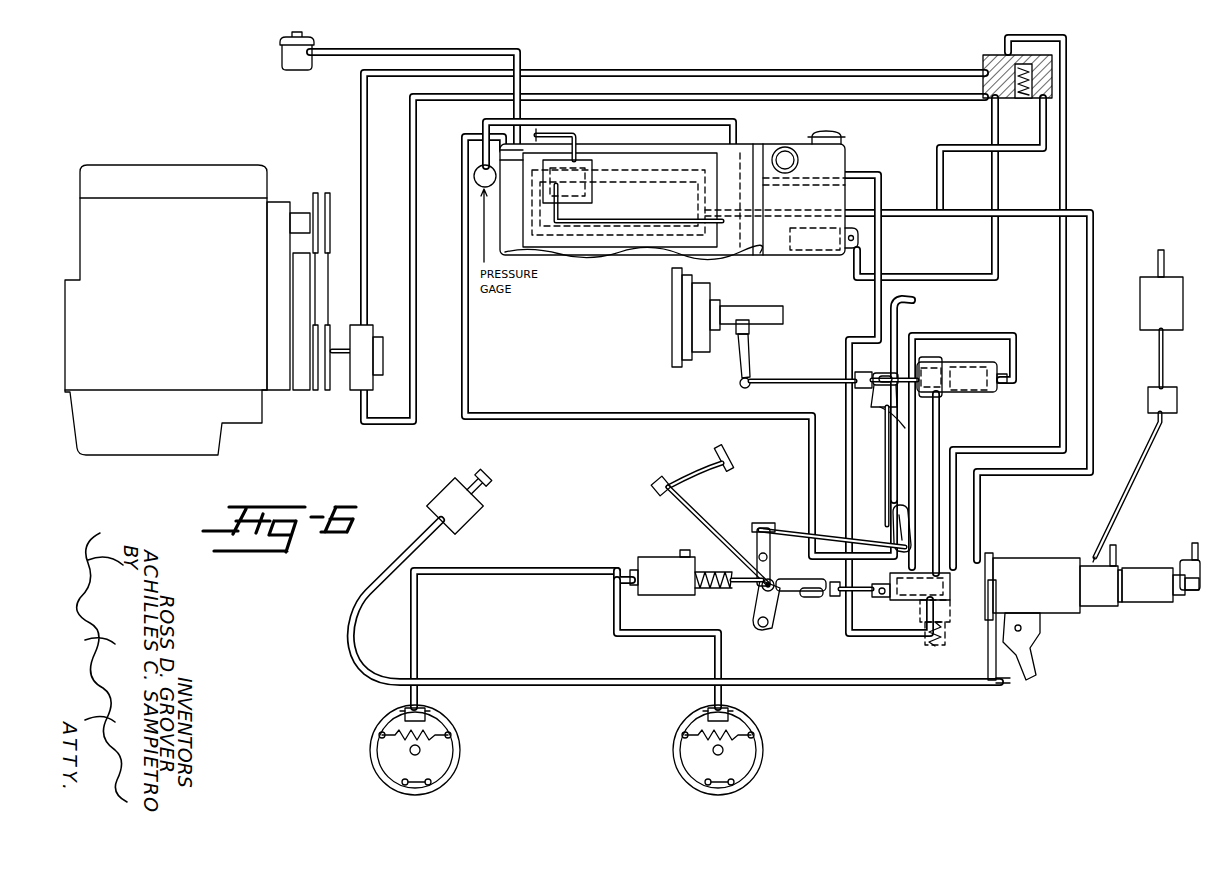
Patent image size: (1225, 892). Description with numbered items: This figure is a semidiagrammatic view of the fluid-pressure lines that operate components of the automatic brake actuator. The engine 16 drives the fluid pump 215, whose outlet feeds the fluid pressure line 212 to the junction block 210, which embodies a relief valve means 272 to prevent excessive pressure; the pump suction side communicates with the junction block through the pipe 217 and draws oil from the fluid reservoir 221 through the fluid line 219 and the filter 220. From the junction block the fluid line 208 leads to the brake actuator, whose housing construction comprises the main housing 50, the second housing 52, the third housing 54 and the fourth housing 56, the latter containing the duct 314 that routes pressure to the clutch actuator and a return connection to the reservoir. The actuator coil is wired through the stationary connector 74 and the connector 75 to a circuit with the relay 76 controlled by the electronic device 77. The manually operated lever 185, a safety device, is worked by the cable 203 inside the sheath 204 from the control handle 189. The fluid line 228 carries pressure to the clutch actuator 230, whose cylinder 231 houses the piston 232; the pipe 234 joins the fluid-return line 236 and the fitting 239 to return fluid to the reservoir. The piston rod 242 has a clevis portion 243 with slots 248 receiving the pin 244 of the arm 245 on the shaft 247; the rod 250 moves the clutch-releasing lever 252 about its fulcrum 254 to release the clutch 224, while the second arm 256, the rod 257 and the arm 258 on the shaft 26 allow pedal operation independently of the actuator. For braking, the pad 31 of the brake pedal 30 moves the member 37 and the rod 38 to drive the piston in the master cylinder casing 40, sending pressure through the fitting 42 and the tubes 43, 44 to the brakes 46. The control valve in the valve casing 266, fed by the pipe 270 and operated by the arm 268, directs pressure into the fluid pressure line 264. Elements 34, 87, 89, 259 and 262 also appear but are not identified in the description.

The engine 16 is at (183, 281).
The shaft 26 is at (795, 647).
The brake pedal 30 is at (682, 495).
The pad 31 is at (722, 456).
The pedal lever 34 is at (782, 604).
The member 37 is at (830, 608).
The rod 38 is at (738, 588).
The master cylinder casing 40 is at (682, 587).
The fitting 42 is at (622, 568).
The tube 43 is at (476, 574).
The tube 44 is at (617, 628).
The brakes 46 is at (468, 766).
The main housing 50 is at (1050, 592).
The second housing 52 is at (1160, 594).
The third housing 54 is at (984, 604).
The fourth housing 56 is at (986, 624).
The stationary connector 74 is at (1092, 556).
The connector 75 is at (1108, 538).
The relay 76 is at (1150, 408).
The electronic device 77 is at (1142, 308).
The terminal 87 is at (1192, 592).
The switch 89 is at (1190, 566).
The manually operated lever 185 is at (1040, 652).
The control handle 189 is at (485, 470).
The cable 203 is at (1012, 682).
The sheath 204 is at (835, 700).
The fluid line 208 is at (1063, 168).
The junction block 210 is at (1052, 49).
The fluid pressure line 212 is at (985, 71).
The fluid pump 215 is at (362, 388).
The pipe 217 is at (985, 98).
The fluid line 219 is at (993, 132).
The filter 220 is at (860, 238).
The fluid reservoir 221 is at (775, 255).
The clutch 224 is at (720, 294).
The fluid line 228 is at (940, 432).
The clutch actuator 230 is at (945, 368).
The cylinder 231 is at (966, 388).
The piston 232 is at (950, 360).
The pipe 234 is at (1008, 380).
The fluid-return line 236 is at (650, 417).
The fitting 239 is at (880, 580).
The rod 242 is at (888, 368).
The clevis portion 243 is at (870, 396).
The pin 244 is at (849, 342).
The arm 245 is at (880, 404).
The shaft 247 is at (885, 450).
The slots 248 is at (896, 318).
The rod 250 is at (782, 381).
The clutch-releasing lever 252 is at (752, 334).
The fulcrum 254 is at (740, 362).
The second arm 256 is at (890, 526).
The rod 257 is at (758, 556).
The arm 258 is at (760, 532).
The pin 259 is at (772, 546).
The conduit 262 is at (917, 548).
The fluid pressure line 264 is at (977, 503).
The valve casing 266 is at (602, 176).
The arm 268 is at (578, 135).
The pipe 270 is at (940, 152).
The relief valve means 272 is at (1032, 82).
The duct 314 is at (926, 646).